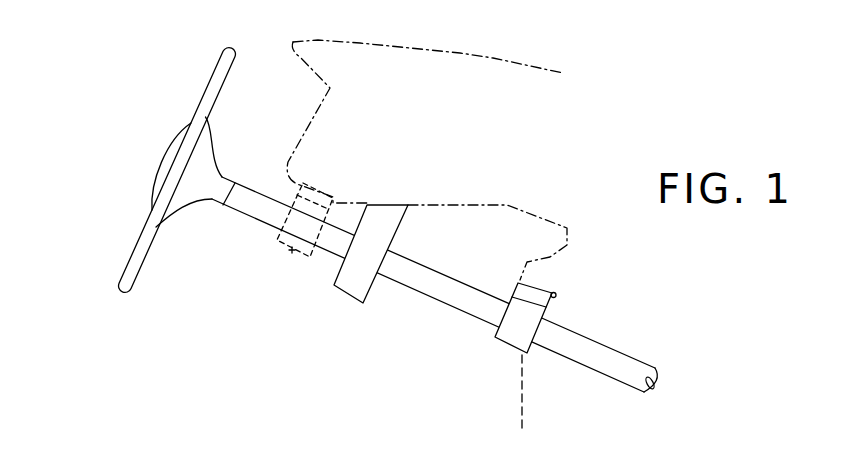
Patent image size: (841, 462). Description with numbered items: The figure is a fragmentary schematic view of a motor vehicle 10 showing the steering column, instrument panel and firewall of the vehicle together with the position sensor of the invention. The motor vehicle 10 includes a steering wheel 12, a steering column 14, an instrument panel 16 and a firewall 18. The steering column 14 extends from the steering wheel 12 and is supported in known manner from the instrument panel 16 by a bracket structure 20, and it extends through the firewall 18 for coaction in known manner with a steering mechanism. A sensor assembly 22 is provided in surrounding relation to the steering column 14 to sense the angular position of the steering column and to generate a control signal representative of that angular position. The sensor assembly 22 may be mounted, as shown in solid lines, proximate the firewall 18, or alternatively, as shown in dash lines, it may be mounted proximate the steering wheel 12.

The motor vehicle 10 is at (110, 48).
The steering wheel 12 is at (124, 272).
The steering column 14 is at (242, 206).
The instrument panel 16 is at (493, 58).
The firewall 18 is at (523, 415).
The bracket structure 20 is at (343, 292).
The sensor assembly 22 is at (287, 248).